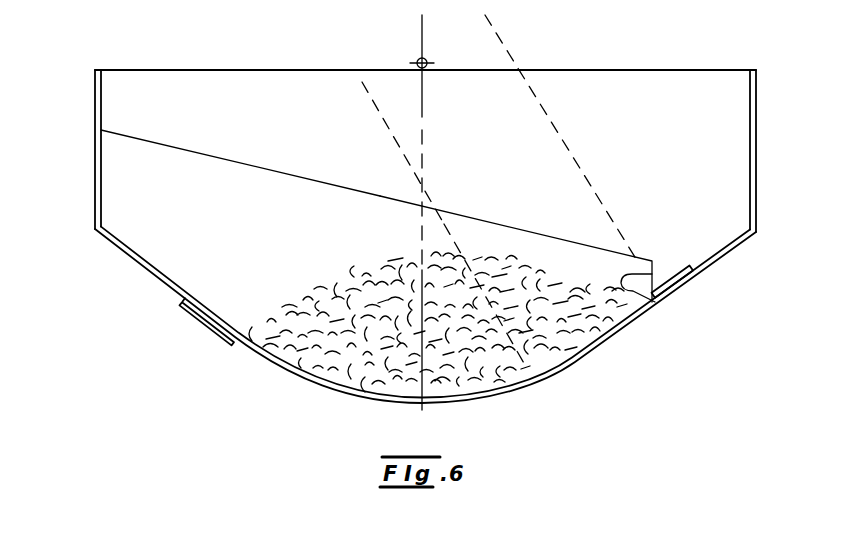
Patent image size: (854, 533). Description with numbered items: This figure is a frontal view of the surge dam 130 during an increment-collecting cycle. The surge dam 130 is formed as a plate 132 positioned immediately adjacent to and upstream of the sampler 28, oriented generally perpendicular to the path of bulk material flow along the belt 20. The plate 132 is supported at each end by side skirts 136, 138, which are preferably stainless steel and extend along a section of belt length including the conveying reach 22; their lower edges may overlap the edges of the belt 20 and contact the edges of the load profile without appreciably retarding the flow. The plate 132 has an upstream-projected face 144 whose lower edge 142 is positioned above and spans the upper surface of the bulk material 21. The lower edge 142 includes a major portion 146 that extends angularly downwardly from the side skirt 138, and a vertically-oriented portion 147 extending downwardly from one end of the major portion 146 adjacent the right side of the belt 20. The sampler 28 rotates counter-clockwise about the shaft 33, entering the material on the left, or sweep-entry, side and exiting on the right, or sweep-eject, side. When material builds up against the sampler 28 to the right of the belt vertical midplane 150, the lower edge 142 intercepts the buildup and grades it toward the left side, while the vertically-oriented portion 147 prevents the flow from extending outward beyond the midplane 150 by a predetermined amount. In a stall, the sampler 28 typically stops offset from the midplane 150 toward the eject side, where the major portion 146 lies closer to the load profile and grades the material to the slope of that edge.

The belt 20 is at (595, 352).
The bulk material 21 is at (297, 347).
The conveying reach 22 is at (237, 348).
The sampler 28 is at (438, 215).
The shaft 33 is at (433, 60).
The surge dam 130 is at (545, 68).
The plate 132 is at (622, 70).
The side skirt 136 is at (758, 123).
The side skirt 138 is at (95, 148).
The lower edge 142 is at (222, 160).
The upstream-projected face 144 is at (327, 88).
The major portion 146 is at (290, 175).
The vertically-oriented portion 147 is at (657, 302).
The belt vertical midplane 150 is at (425, 408).